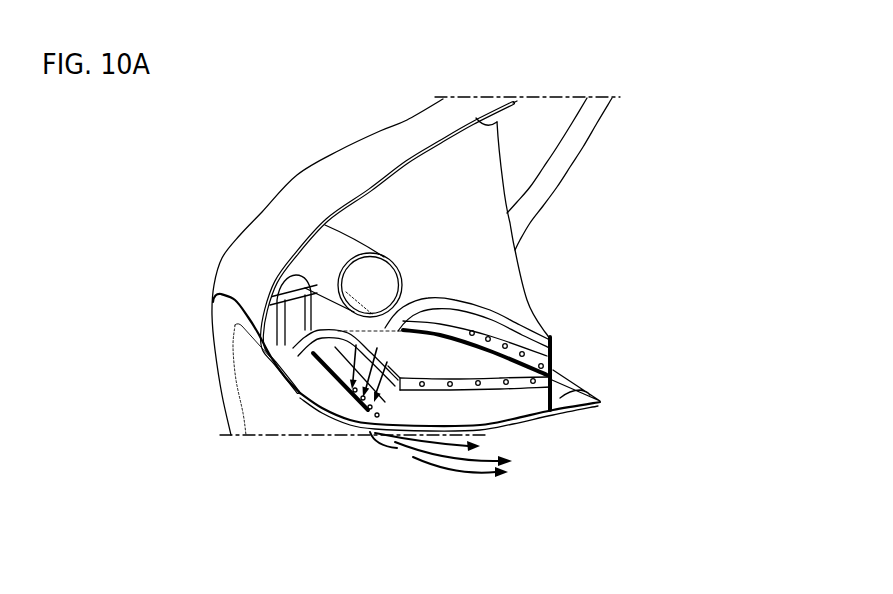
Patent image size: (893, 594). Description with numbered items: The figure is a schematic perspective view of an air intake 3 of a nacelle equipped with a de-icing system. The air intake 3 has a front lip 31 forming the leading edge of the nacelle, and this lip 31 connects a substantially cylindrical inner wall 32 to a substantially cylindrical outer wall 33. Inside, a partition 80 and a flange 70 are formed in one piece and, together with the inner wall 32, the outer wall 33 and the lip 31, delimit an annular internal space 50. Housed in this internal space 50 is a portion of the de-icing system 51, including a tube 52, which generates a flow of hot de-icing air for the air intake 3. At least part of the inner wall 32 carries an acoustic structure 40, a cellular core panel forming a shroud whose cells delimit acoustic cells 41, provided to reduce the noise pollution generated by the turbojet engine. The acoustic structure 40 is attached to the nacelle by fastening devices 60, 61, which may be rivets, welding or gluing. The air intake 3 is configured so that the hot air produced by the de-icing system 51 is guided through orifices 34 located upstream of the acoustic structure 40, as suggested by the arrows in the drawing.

The air intake 3 is at (360, 135).
The internal space 50 is at (435, 178).
The outer wall 33 is at (453, 115).
The de-icing system 51 is at (326, 225).
The tube 52 is at (323, 268).
The front lip 31 is at (231, 307).
The inner wall 32 is at (519, 423).
The partition 80 is at (488, 240).
The acoustic structure 40 is at (469, 342).
The fastening device 61 is at (545, 362).
The acoustic cells 41 is at (532, 401).
The fastening device 60 is at (562, 356).
The flange 70 is at (577, 390).
The orifices 34 is at (382, 410).